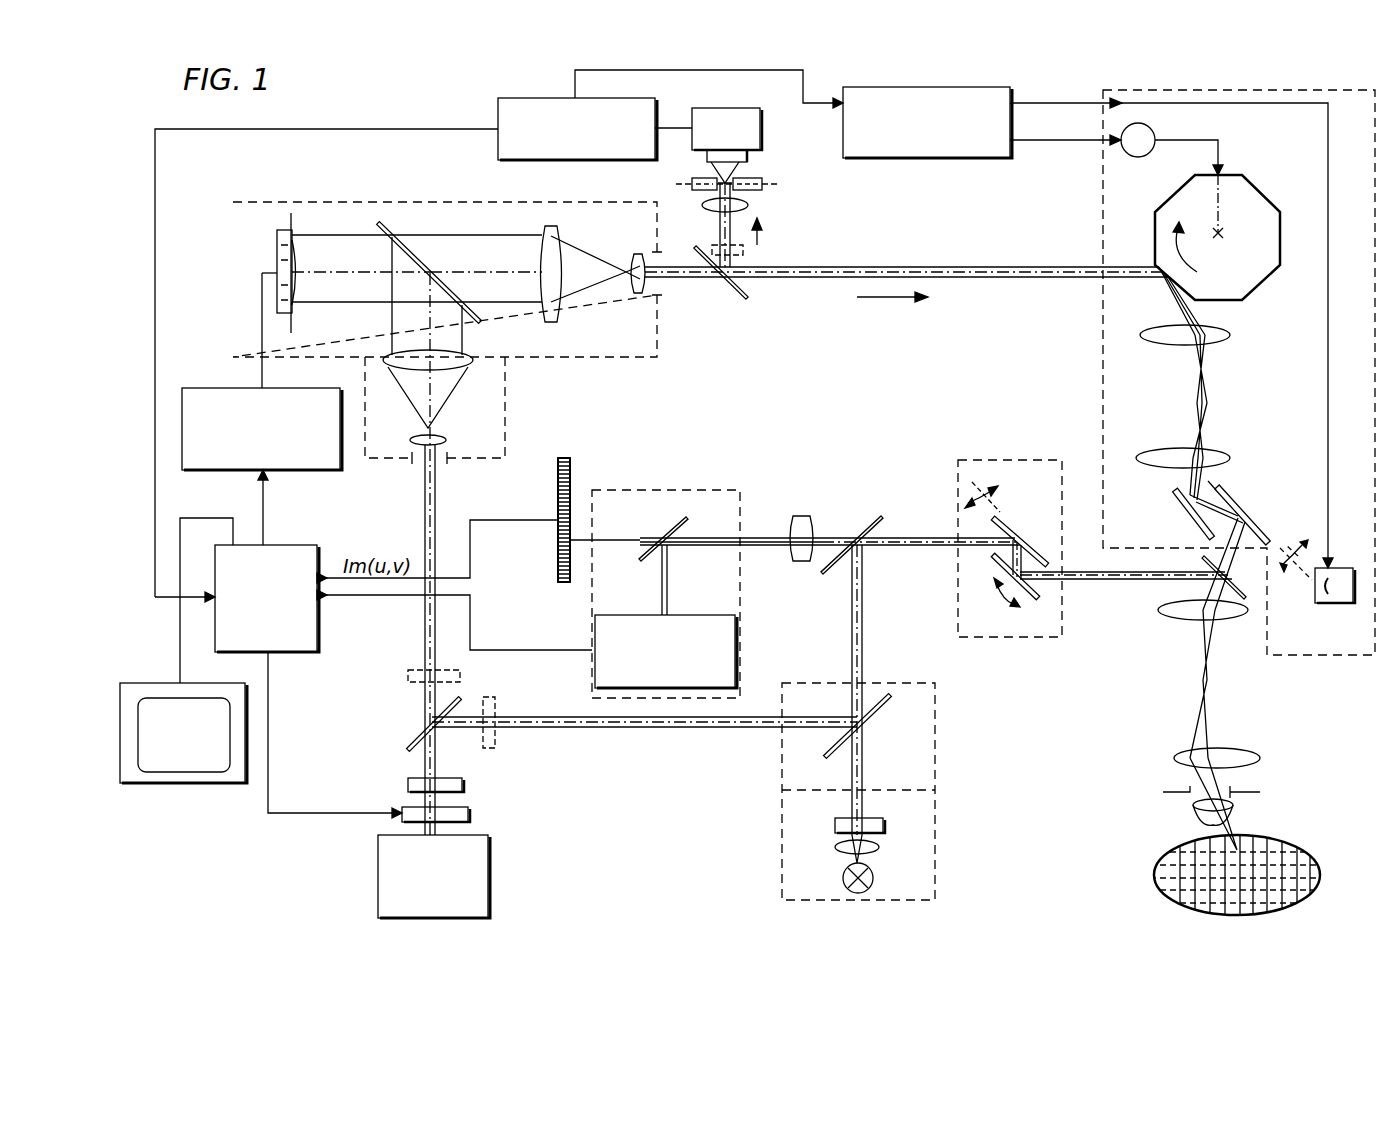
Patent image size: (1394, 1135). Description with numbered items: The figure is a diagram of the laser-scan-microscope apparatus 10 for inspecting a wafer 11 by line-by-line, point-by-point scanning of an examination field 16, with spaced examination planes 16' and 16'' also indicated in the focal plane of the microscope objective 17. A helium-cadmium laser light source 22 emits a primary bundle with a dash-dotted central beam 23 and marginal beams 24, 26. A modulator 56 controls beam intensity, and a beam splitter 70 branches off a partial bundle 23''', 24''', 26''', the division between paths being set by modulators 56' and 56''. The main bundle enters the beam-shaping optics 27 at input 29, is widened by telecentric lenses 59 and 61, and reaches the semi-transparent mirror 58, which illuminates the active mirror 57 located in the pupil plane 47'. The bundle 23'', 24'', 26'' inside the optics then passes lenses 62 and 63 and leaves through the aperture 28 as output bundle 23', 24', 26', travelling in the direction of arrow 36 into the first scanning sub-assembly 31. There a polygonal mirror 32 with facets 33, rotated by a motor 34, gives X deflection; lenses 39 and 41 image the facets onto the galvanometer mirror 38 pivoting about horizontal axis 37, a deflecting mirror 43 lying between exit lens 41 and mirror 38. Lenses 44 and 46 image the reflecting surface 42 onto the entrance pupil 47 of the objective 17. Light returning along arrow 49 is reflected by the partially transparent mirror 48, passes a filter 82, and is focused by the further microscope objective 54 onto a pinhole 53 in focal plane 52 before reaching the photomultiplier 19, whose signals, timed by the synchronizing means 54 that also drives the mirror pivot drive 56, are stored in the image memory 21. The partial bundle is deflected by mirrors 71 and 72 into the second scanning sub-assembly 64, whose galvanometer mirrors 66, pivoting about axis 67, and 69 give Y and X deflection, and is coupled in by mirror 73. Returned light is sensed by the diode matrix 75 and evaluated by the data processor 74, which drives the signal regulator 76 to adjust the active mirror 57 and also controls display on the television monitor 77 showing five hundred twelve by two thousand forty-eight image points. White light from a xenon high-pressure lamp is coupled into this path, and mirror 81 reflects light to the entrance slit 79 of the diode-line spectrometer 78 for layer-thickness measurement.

The apparatus 10 is at (672, 816).
The wafer 11 is at (1318, 858).
The examination field 16 is at (1318, 842).
The spaced examination plane 16' is at (1147, 851).
The spaced examination plane 16'' is at (1319, 913).
The microscope objective 17 is at (1235, 810).
The photomultiplier 19 is at (760, 138).
The image memory 21 is at (498, 108).
The light source 22 is at (488, 870).
The central beam 23 is at (452, 554).
The central beam of output bundle 23' is at (904, 294).
The central beam within beam-shaping optics 23'' is at (417, 290).
The central beam of partial bundle 23''' is at (644, 744).
The marginal beam 24 is at (406, 640).
The marginal beam of output bundle 24' is at (902, 252).
The marginal beam within beam-shaping optics 24'' is at (417, 319).
The marginal beam of partial bundle 24''' is at (644, 768).
The marginal beam 26 is at (452, 640).
The marginal beam of output bundle 26' is at (906, 296).
The marginal beam within beam-shaping optics 26'' is at (417, 204).
The marginal beam of partial bundle 26''' is at (644, 694).
The beam-shaping optics 27 is at (418, 203).
The aperture 28 is at (657, 348).
The input of beam-shaping optics 29 is at (405, 468).
The first scanning sub-assembly 31 is at (1103, 322).
The polygonal mirror 32 is at (1250, 290).
The facets 33 is at (1275, 222).
The motor 34 is at (1142, 157).
The arrow 36 is at (863, 310).
The horizontal axis 37 is at (1218, 486).
The galvanometer mirror 38 is at (1250, 510).
The lens 39 is at (1165, 345).
The exit lens 41 is at (1165, 450).
The reflecting surface 42 is at (1248, 560).
The deflecting mirror 43 is at (1176, 512).
The lens 44 is at (1192, 622).
The lens 46 is at (1183, 752).
The entrance pupil 47 is at (1195, 780).
The pupil plane 47' is at (300, 310).
The partially transparent mirror 48 is at (740, 292).
The arrow 49 is at (760, 236).
The focal plane 52 is at (765, 184).
The pinhole 53 is at (703, 178).
The synchronizing means 54 is at (912, 160).
The pivot drive 56 is at (1317, 588).
The modulator 56' is at (416, 660).
The modulator 56'' is at (501, 741).
The active mirror 57 is at (292, 265).
The semi-transparent mirror 58 is at (420, 260).
The telecentric lens 59 is at (442, 440).
The telecentric lens 61 is at (462, 372).
The lens 62 is at (551, 228).
The lens 63 is at (637, 253).
The second scanning sub-assembly 64 is at (958, 602).
The first galvanometer mirror 66 is at (1032, 530).
The horizontal axis 67 is at (968, 490).
The second galvanometer mirror 69 is at (1026, 600).
The beam splitter 70 is at (418, 735).
The first partially transparent mirror 71 is at (872, 712).
The second partially transparent mirror 72 is at (865, 520).
The third partially transparent mirror 73 is at (1205, 562).
The data processor 74 is at (305, 545).
The diode matrix 75 is at (557, 496).
The signal regulator 76 is at (196, 388).
The display monitor 77 is at (162, 783).
The diode-line spectrometer 78 is at (690, 615).
The entrance slit 79 is at (660, 612).
The partially transparent mirror 81 is at (670, 522).
The filter 82 is at (745, 250).